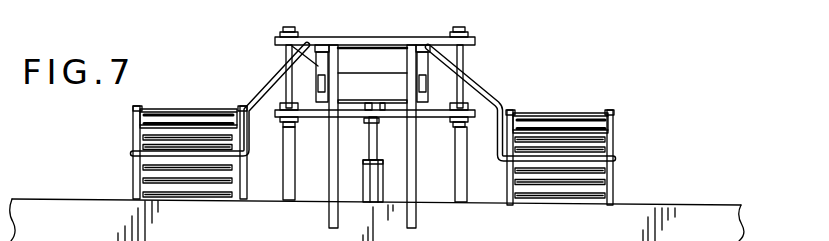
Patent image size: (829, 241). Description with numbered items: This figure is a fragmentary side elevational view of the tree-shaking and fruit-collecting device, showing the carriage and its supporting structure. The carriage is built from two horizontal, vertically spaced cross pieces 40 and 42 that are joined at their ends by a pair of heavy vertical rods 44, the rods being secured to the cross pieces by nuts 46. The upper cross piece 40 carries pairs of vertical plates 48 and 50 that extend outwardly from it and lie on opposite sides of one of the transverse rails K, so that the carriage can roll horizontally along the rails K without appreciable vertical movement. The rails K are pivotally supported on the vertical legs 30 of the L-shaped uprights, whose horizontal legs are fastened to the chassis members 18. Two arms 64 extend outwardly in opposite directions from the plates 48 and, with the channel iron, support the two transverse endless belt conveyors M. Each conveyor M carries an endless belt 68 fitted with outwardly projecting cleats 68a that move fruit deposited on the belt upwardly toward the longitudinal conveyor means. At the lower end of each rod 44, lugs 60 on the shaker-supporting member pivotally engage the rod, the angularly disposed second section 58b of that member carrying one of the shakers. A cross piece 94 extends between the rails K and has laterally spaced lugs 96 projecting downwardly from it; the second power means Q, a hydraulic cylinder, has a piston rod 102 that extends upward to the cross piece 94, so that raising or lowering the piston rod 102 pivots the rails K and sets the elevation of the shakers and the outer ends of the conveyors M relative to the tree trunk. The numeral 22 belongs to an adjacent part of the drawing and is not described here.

The chassis member 18 is at (645, 2).
The element of adjacent figure 22 is at (551, 5).
The vertical leg 30 is at (329, 183).
The cross piece 40 is at (438, 37).
The cross piece 42 is at (417, 112).
The vertical rod 44 is at (286, 60).
The nut 46 is at (293, 31).
The vertical plate 48 is at (268, 87).
The vertical plate 50 is at (325, 46).
The second section 58b is at (283, 160).
The lug 60 is at (250, 118).
The arm 64 is at (270, 84).
The endless belt 68 is at (148, 172).
The cleat 68a is at (196, 194).
The cross piece 94 is at (362, 84).
The lug 96 is at (358, 110).
The piston rod 102 is at (383, 140).
The transverse rail K is at (410, 63).
The endless belt conveyor M is at (371, 138).
The second power means Q is at (372, 187).